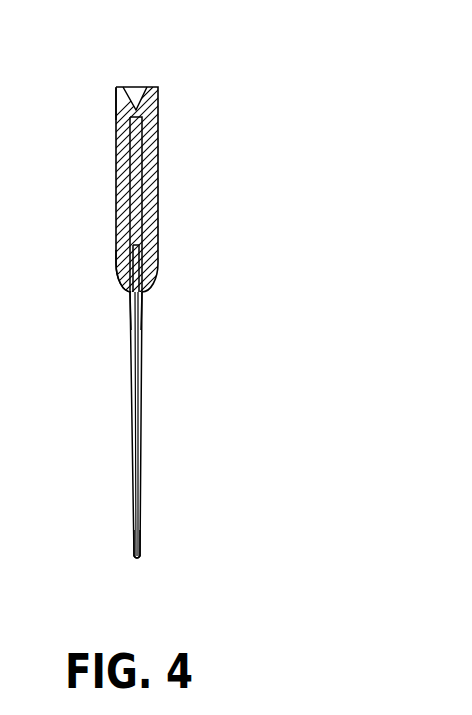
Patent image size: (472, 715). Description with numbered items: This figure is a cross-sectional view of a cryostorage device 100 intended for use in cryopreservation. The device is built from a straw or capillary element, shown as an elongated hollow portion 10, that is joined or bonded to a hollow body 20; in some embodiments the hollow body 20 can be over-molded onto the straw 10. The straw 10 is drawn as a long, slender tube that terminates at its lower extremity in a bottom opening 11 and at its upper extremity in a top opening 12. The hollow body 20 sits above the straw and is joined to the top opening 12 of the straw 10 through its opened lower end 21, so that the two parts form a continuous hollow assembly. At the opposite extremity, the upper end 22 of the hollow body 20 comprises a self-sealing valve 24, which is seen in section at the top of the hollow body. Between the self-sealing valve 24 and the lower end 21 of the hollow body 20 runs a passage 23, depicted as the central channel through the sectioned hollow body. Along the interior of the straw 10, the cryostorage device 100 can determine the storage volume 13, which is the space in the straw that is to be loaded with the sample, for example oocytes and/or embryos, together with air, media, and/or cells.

The cryostorage device 100 is at (205, 312).
The elongated hollow portion 10 is at (134, 401).
The bottom opening 11 is at (133, 548).
The top opening 12 is at (128, 290).
The storage volume 13 is at (130, 443).
The hollow body 20 is at (158, 175).
The opened lower end 21 is at (117, 272).
The upper end 22 is at (116, 99).
The passage 23 is at (132, 187).
The self-sealing valve 24 is at (136, 98).